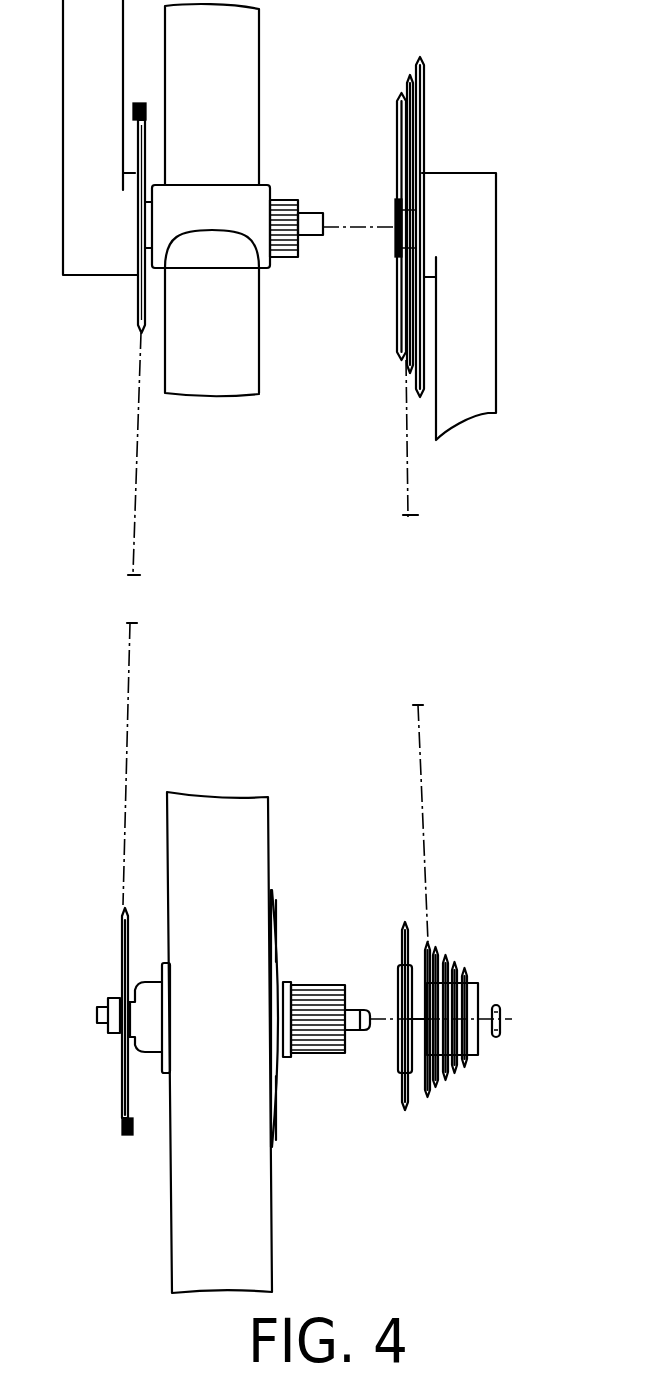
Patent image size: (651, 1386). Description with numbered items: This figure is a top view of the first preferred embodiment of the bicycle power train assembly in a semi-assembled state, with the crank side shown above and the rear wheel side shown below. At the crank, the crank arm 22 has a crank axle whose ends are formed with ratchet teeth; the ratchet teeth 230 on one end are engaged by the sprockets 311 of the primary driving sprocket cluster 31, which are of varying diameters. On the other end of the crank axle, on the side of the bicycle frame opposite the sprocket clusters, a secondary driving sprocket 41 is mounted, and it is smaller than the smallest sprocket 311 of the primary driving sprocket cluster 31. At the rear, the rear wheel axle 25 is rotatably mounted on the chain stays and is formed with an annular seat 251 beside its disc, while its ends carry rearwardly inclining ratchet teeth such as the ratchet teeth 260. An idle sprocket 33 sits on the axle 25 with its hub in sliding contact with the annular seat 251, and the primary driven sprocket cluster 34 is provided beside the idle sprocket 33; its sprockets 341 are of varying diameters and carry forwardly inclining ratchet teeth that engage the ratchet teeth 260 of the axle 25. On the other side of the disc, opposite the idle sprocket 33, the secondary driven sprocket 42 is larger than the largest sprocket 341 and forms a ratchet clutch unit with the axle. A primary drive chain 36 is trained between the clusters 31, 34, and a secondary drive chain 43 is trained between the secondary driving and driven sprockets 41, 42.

The crank arm 22 is at (488, 332).
The ratchet teeth 230 is at (288, 206).
The secondary driving sprocket 41 is at (140, 305).
The primary driving sprocket cluster 31 is at (406, 233).
The sprockets 311 is at (403, 340).
The secondary drive chain 43 is at (125, 800).
The secondary driven sprocket 42 is at (127, 942).
The annular seat 251 is at (287, 980).
The ratchet teeth 260 is at (320, 1040).
The rear wheel axle 25 is at (358, 1012).
The idle sprocket 33 is at (402, 1093).
The primary driven sprocket cluster 34 is at (474, 1021).
The sprockets 341 is at (428, 942).
The primary drive chain 36 is at (427, 877).